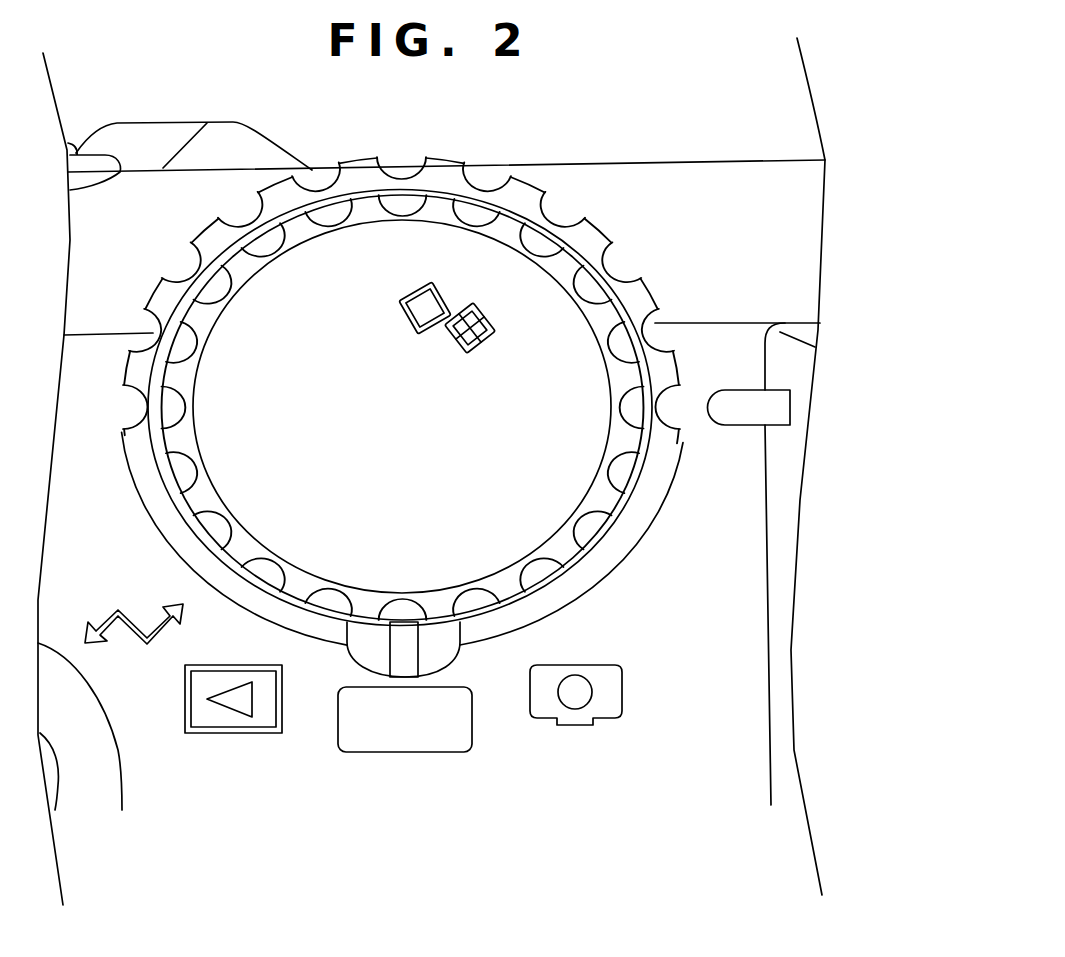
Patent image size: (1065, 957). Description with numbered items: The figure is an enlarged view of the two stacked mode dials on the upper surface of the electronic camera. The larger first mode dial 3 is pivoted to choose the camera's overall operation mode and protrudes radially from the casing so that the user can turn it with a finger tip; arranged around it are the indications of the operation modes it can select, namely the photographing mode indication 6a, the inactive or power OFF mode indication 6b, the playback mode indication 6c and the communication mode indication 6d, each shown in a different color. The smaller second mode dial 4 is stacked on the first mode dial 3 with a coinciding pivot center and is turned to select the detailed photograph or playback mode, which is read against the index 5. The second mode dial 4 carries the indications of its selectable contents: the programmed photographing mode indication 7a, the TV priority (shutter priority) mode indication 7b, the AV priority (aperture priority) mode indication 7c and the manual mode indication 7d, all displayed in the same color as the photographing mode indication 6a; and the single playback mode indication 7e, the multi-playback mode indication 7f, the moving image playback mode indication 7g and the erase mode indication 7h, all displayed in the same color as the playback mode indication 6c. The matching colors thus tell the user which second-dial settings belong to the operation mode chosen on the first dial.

The first mode dial 3 is at (386, 152).
The second mode dial 4 is at (507, 223).
The index 5 is at (740, 427).
The photographing mode indication 6a is at (580, 726).
The inactive mode indication 6b is at (398, 755).
The playback mode indication 6c is at (232, 736).
The communication mode indication 6d is at (130, 642).
The programmed photographing mode indication 7a is at (440, 234).
The TV priority mode indication 7b is at (533, 273).
The AV priority mode indication 7c is at (570, 327).
The manual mode indication 7d is at (586, 424).
The single playback mode indication 7e is at (402, 312).
The multi-playback mode indication 7f is at (454, 343).
The moving image playback mode indication 7g is at (458, 387).
The erase mode indication 7h is at (522, 432).